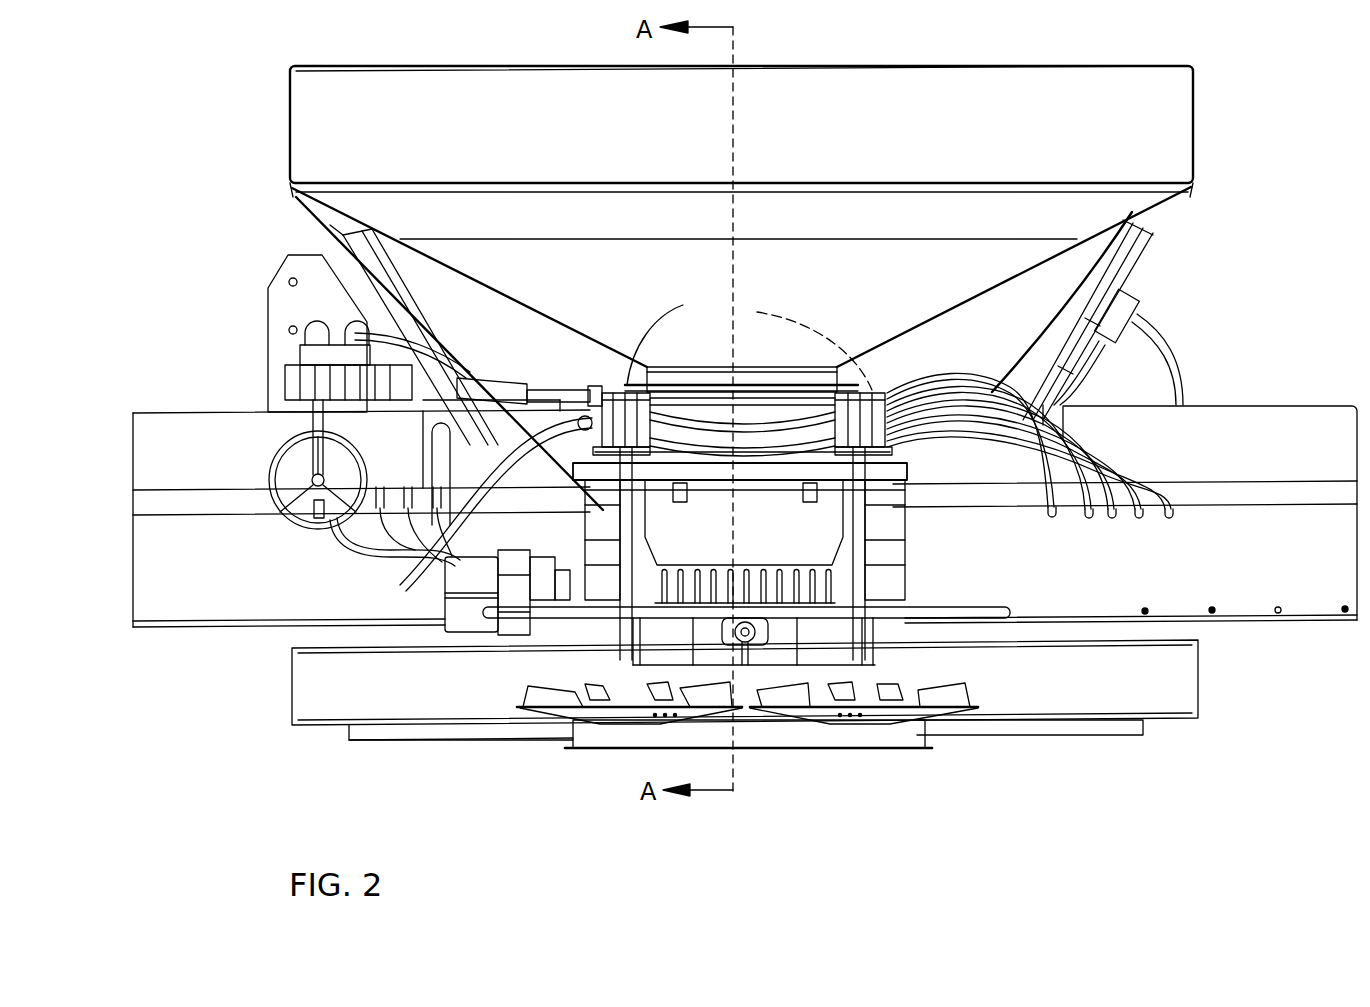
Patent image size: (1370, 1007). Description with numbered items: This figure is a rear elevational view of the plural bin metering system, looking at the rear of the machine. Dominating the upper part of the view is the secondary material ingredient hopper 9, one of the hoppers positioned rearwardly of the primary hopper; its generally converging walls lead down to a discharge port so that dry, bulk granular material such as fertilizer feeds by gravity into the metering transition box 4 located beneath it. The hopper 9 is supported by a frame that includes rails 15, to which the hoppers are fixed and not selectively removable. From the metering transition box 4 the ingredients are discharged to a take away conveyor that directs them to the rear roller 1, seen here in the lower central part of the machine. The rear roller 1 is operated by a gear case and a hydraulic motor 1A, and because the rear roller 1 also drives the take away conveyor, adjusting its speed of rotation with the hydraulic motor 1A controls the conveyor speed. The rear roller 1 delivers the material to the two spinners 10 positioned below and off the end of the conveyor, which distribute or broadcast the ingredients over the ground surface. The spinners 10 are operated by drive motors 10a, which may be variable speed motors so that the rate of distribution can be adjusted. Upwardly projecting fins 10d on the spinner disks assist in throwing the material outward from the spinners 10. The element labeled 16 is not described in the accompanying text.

The rear roller 1 is at (697, 580).
The hydraulic motor 1A is at (467, 615).
The metering transition box 4 is at (795, 541).
The secondary material ingredient hopper 9 is at (1173, 110).
The spinner 10 is at (617, 727).
The drive motor 10a is at (749, 380).
The fin 10d is at (548, 690).
The rail 15 is at (1118, 262).
The hydraulic hoses / adjusting wheel 16 is at (283, 515).